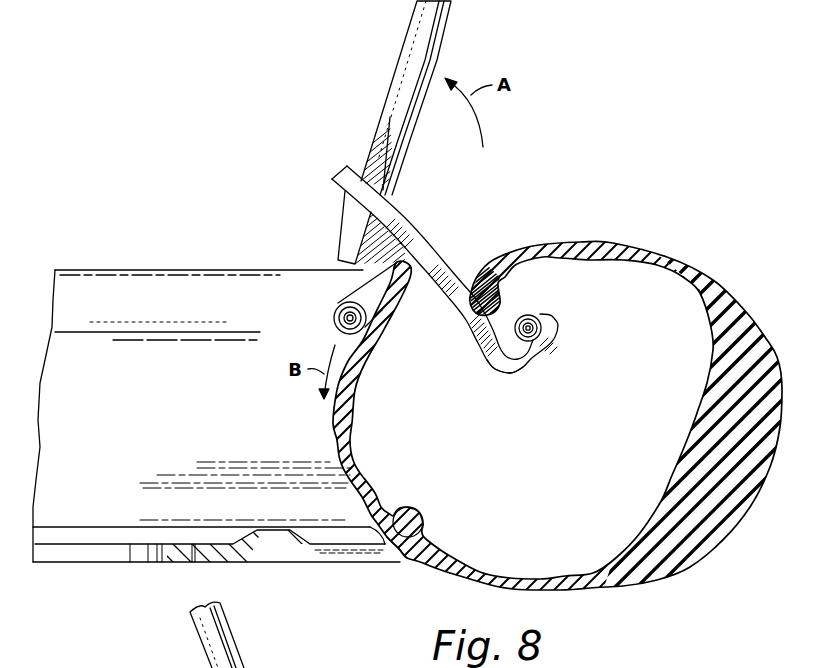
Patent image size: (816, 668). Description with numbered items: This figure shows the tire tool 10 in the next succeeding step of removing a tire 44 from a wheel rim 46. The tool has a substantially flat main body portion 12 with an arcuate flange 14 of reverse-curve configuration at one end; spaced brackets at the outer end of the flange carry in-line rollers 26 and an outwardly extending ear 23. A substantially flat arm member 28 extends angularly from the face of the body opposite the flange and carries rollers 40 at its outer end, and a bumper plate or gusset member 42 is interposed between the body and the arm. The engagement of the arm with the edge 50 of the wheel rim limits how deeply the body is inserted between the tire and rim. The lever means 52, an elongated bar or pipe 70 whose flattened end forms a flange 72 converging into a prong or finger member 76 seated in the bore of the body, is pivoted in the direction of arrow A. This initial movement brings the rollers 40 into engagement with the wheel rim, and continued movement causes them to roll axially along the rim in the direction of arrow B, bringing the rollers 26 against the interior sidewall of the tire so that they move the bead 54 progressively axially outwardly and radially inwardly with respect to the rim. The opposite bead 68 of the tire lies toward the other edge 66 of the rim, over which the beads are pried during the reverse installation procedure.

The tire tool 10 is at (452, 274).
The main body portion 12 is at (446, 312).
The arcuate flange 14 is at (527, 365).
The ear 23 is at (557, 329).
The rollers 26 is at (540, 316).
The arm member 28 is at (362, 292).
The rollers 40 is at (334, 318).
The bumper plate or gusset member 42 is at (393, 215).
The tire 44 is at (663, 577).
The wheel rim 46 is at (220, 562).
The edge of the wheel rim 50 is at (407, 264).
The lever means 52 is at (398, 47).
The bead 54 is at (496, 310).
The edge of the rim 66 is at (409, 562).
The bead 68 is at (411, 506).
The elongated bar or pipe 70 is at (445, 29).
The flange 72 is at (380, 150).
The prong or finger member 76 is at (347, 240).